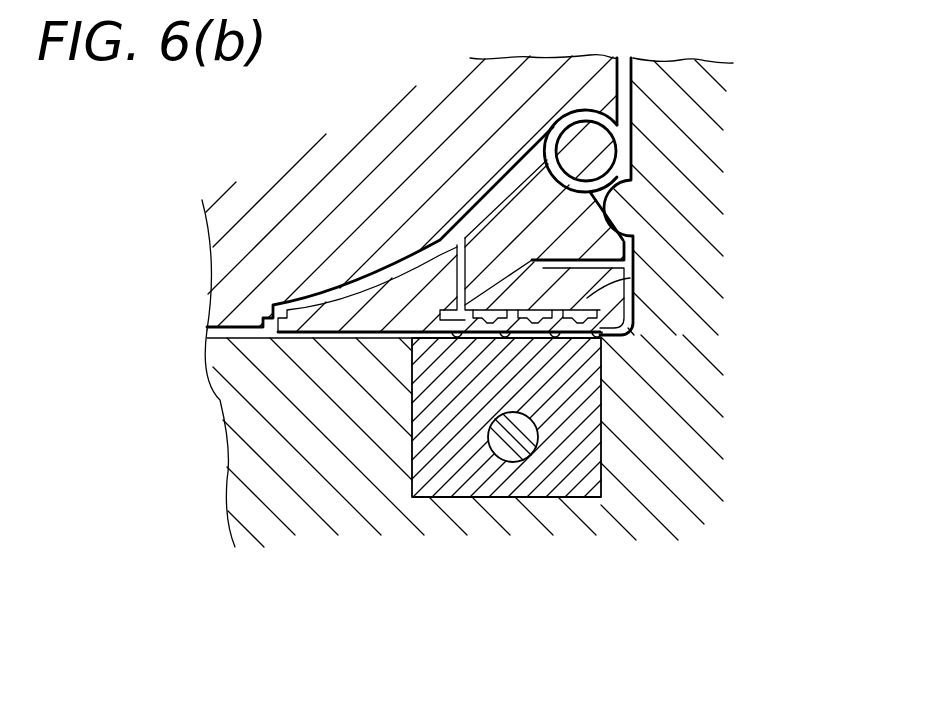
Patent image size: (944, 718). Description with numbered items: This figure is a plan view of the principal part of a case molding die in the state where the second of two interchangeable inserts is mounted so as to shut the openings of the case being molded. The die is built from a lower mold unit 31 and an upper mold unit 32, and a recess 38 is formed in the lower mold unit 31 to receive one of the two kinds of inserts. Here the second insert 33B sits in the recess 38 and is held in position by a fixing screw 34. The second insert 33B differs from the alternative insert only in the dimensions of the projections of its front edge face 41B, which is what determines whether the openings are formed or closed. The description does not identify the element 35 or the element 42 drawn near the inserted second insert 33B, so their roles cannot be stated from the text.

The lower mold unit 31 is at (364, 455).
The upper mold unit 32 is at (443, 130).
The second insert 33B is at (600, 403).
The fixing screw 34 is at (518, 445).
The tube 35 is at (631, 140).
The recess 38 is at (601, 470).
The front edge face 41B is at (634, 316).
The serrated seal member 42 is at (633, 277).